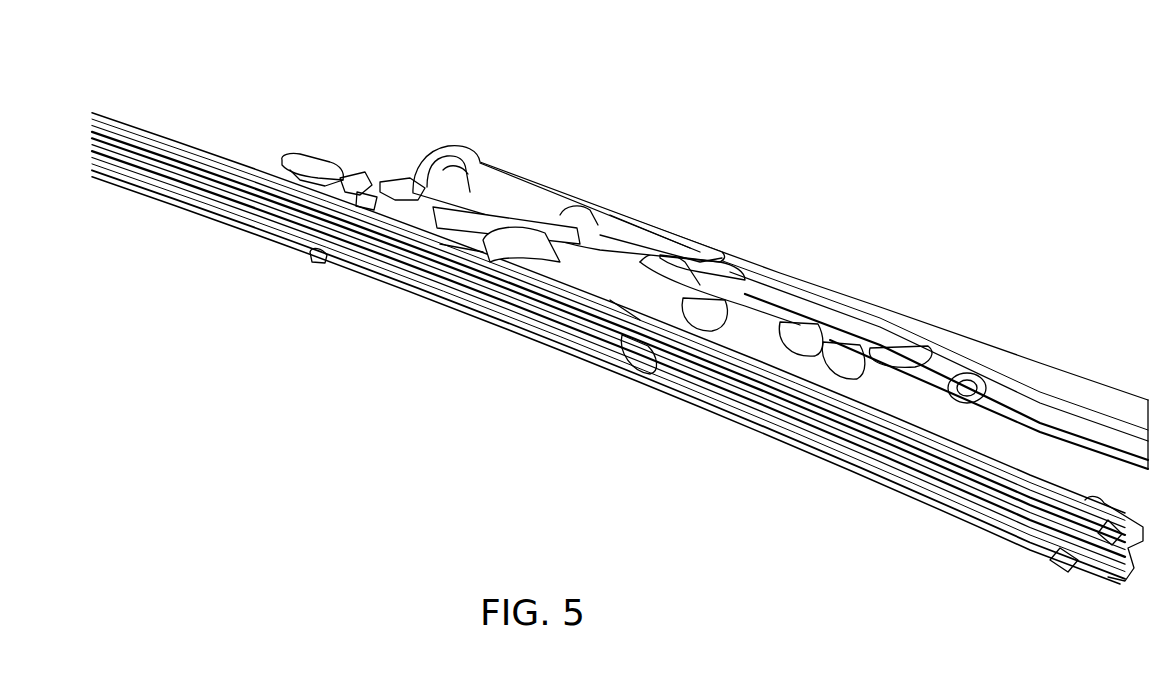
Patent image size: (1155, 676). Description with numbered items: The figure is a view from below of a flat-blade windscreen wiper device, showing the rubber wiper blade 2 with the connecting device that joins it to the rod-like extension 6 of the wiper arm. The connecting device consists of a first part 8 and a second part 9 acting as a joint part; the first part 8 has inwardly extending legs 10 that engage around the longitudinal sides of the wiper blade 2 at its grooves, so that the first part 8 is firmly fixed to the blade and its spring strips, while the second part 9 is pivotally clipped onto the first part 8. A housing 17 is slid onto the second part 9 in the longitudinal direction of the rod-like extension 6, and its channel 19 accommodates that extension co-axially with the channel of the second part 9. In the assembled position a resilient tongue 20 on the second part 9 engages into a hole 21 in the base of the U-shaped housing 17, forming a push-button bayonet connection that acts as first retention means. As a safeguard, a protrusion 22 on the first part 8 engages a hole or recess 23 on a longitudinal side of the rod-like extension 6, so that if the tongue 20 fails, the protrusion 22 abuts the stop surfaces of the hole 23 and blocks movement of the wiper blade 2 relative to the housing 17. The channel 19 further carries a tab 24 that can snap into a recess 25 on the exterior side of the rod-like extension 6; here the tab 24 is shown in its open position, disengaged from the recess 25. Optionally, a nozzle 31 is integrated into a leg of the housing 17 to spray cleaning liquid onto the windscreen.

The wiper blade 2 is at (758, 423).
The rod-like extension 6 is at (553, 210).
The first part 8 is at (358, 202).
The second part 9 is at (352, 177).
The legs 10 is at (408, 237).
The housing 17 is at (867, 307).
The channel 19 is at (740, 287).
The resilient tongue 20 is at (300, 157).
The hole 21 is at (510, 200).
The protrusion 22 is at (403, 160).
The hole or recess 23 is at (612, 206).
The tab 24 is at (655, 330).
The recess 25 is at (675, 263).
The nozzle 31 is at (857, 360).